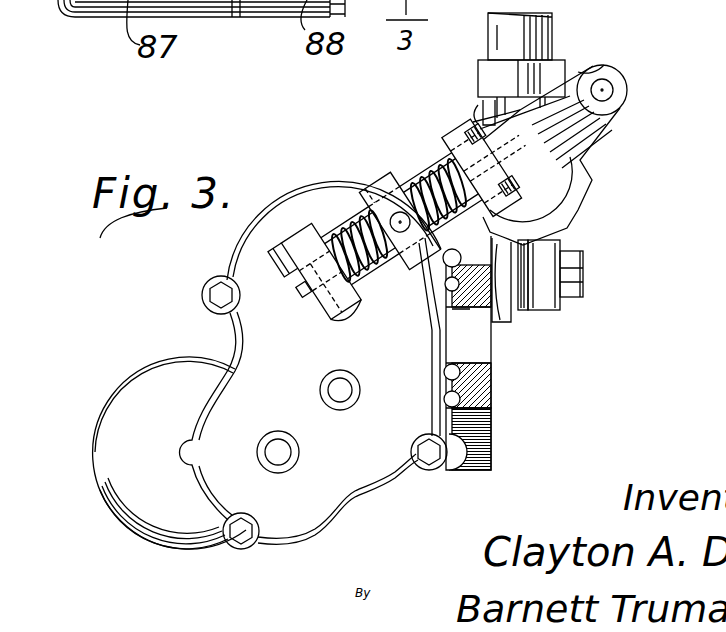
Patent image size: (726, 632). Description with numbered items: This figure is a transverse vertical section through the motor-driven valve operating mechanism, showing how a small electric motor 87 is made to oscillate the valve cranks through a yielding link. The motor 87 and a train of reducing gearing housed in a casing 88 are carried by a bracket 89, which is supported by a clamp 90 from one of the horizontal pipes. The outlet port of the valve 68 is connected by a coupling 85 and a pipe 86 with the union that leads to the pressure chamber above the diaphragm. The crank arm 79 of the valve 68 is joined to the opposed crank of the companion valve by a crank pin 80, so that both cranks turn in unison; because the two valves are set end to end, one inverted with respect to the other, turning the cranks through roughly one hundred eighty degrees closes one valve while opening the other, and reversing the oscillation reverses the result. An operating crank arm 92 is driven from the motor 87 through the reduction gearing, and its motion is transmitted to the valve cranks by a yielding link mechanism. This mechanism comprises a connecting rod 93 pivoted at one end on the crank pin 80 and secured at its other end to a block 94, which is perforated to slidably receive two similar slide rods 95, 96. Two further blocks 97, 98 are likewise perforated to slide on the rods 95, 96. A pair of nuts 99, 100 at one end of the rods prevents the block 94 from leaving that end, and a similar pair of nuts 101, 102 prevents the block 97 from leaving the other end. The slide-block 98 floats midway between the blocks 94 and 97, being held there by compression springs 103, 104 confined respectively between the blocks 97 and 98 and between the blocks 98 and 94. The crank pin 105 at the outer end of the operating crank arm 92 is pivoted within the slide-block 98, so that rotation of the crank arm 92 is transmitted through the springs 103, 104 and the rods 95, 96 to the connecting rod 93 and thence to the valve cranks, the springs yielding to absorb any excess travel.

The valve 68 is at (594, 206).
The crank arm 79 is at (610, 132).
The crank pin 80 is at (616, 90).
The coupling 85 is at (483, 67).
The pipe 86 is at (548, 23).
The electric motor 87 is at (110, 472).
The casing 88 is at (237, 332).
The bracket 89 is at (494, 388).
The clamp 90 is at (589, 294).
The operating crank arm 92 is at (380, 322).
The connecting rod 93 is at (562, 92).
The block 94 is at (470, 133).
The slide rod 95 is at (449, 153).
The slide rod 96 is at (497, 310).
The block 97 is at (290, 243).
The slide-block 98 is at (407, 180).
The nut 99 is at (478, 120).
The nut 100 is at (565, 225).
The nut 101 is at (278, 248).
The nut 102 is at (327, 320).
The compression spring 103 is at (348, 230).
The compression spring 104 is at (413, 183).
The crank pin 105 is at (402, 232).